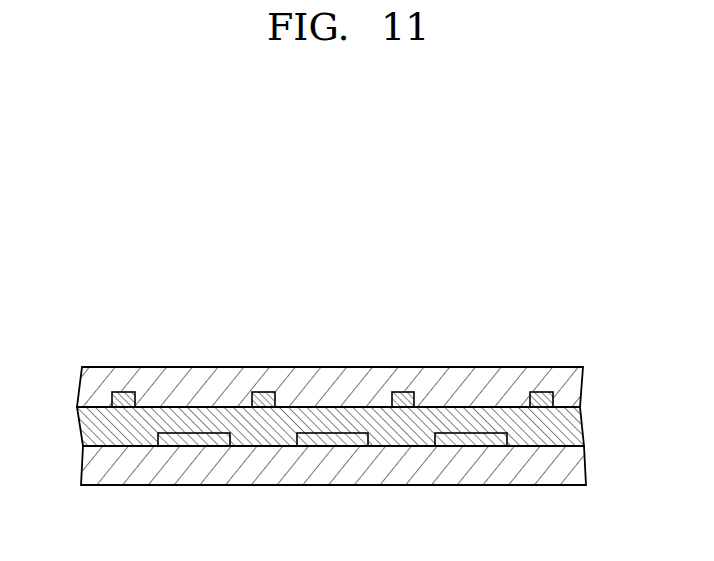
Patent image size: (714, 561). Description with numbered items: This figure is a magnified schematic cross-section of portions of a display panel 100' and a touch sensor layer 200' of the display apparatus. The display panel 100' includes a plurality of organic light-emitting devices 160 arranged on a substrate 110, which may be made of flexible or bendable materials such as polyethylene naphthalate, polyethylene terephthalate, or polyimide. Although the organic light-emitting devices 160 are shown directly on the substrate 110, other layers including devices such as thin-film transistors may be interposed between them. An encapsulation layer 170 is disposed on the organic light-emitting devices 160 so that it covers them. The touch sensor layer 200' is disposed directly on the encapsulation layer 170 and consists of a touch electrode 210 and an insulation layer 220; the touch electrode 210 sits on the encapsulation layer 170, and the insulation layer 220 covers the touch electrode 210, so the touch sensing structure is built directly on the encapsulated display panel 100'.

The display panel 100' is at (334, 471).
The substrate 110 is at (582, 466).
The organic light-emitting devices 160 is at (193, 440).
The encapsulation layer 170 is at (575, 427).
The touch sensor layer 200' is at (330, 341).
The touch electrode 210 is at (473, 318).
The insulation layer 220 is at (455, 374).